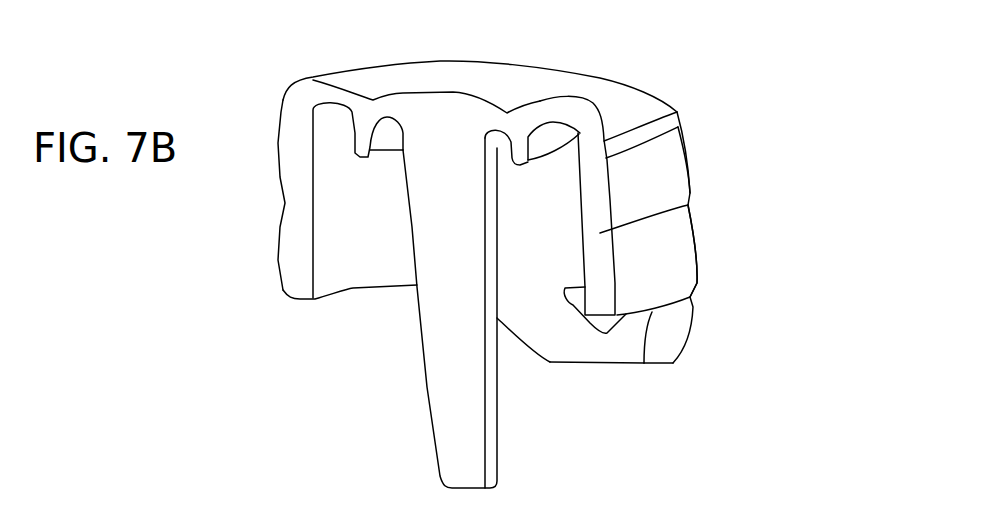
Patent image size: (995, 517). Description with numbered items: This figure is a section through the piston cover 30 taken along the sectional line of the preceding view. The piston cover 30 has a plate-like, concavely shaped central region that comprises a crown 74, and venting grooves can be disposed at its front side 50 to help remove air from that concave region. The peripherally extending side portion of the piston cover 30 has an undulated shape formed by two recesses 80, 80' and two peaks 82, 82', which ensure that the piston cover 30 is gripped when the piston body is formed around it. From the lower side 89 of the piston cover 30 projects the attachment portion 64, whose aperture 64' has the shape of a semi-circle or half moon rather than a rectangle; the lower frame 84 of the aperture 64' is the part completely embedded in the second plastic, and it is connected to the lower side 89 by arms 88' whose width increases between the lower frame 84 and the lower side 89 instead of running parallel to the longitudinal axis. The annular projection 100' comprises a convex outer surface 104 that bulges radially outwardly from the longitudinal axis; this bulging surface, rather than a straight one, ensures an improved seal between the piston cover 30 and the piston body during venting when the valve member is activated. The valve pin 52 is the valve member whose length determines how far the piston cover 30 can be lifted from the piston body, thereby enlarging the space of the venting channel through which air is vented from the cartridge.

The piston cover 30 is at (243, 416).
The front side 50 is at (362, 62).
The valve pin 52 is at (427, 309).
The crown 74 is at (450, 103).
The lower side 89 is at (352, 289).
The annular projection 100' is at (579, 160).
The convex outer surface 104 is at (575, 133).
The recess 80 is at (693, 120).
The peak 82 is at (726, 157).
The recess 80' is at (702, 205).
The peak 82' is at (735, 251).
The attachment portion 64 is at (707, 330).
The aperture 64' is at (606, 366).
The lower frame 84 is at (632, 350).
The arms 88' is at (651, 382).